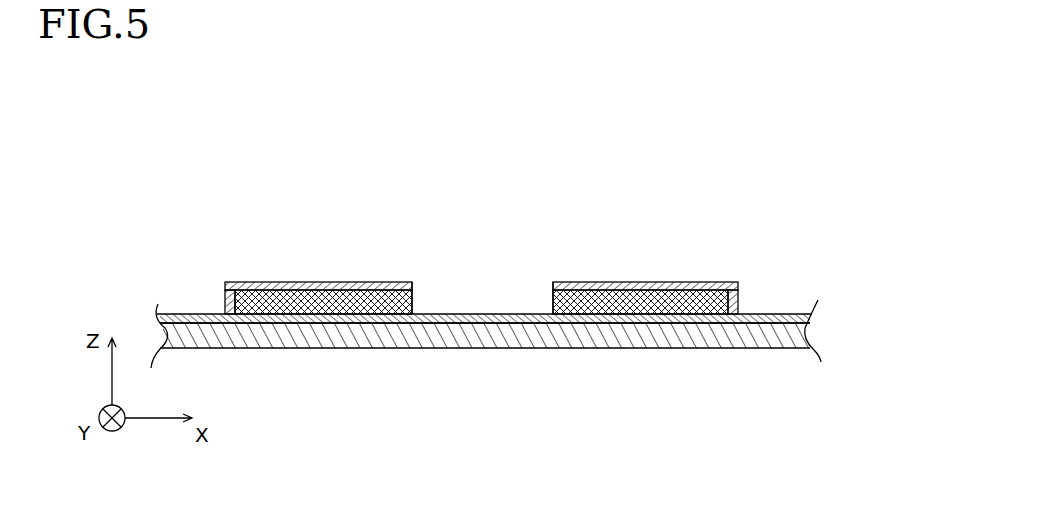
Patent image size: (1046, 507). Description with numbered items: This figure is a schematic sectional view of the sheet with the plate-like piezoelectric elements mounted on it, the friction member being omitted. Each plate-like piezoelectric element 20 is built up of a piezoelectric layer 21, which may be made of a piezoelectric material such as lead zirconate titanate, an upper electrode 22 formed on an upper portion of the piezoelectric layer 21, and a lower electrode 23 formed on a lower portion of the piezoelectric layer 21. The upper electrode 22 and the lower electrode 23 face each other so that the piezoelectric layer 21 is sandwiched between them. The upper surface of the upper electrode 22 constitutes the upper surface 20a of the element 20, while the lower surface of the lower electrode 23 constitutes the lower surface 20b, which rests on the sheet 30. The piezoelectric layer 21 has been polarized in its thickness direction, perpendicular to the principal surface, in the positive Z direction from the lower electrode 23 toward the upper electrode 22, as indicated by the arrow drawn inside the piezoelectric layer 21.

The plate-like piezoelectric element 20 is at (221, 236).
The upper surface 20a is at (306, 280).
The lower surface 20b is at (323, 300).
The piezoelectric layer 21 is at (413, 300).
The upper electrode 22 is at (226, 283).
The lower electrode 23 is at (468, 313).
The substrate 30 is at (808, 333).